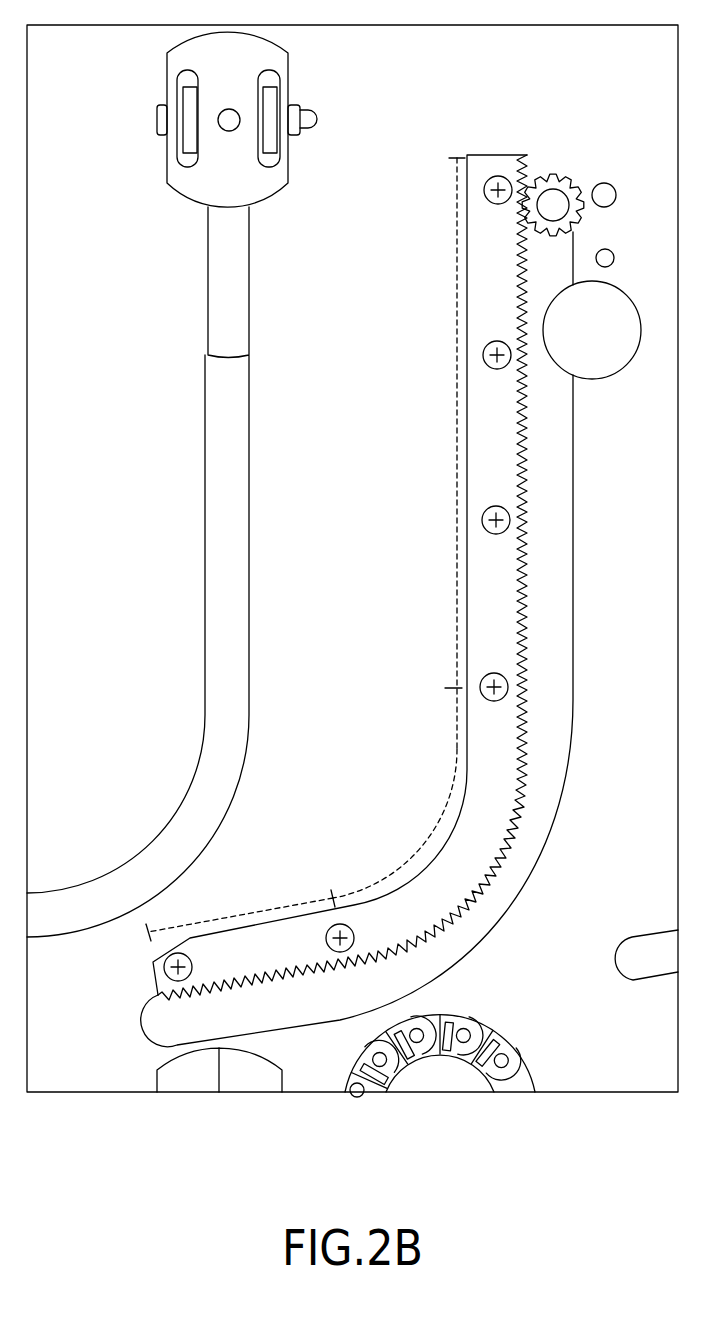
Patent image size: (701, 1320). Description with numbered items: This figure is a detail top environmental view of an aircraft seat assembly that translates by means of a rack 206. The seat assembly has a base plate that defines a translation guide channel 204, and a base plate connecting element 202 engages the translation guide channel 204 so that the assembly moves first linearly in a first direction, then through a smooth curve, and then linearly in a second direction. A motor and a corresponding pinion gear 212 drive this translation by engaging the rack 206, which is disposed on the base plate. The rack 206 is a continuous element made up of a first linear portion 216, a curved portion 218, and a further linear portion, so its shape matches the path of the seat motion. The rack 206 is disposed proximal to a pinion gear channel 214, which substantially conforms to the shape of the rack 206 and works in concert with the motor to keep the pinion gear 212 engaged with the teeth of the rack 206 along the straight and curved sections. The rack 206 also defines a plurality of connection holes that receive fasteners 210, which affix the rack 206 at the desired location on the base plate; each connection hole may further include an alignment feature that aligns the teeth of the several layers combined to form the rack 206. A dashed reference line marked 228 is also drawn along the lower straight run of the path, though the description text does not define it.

The base plate connecting element 202 is at (193, 150).
The translation guide channel 204 is at (216, 505).
The rack 206 is at (488, 273).
The fasteners 210 is at (498, 176).
The pinion gear 212 is at (552, 200).
The pinion gear channel 214 is at (560, 575).
The first linear portion 216 is at (457, 412).
The curved portion 218 is at (440, 815).
The lower straight travel section 228 is at (240, 915).